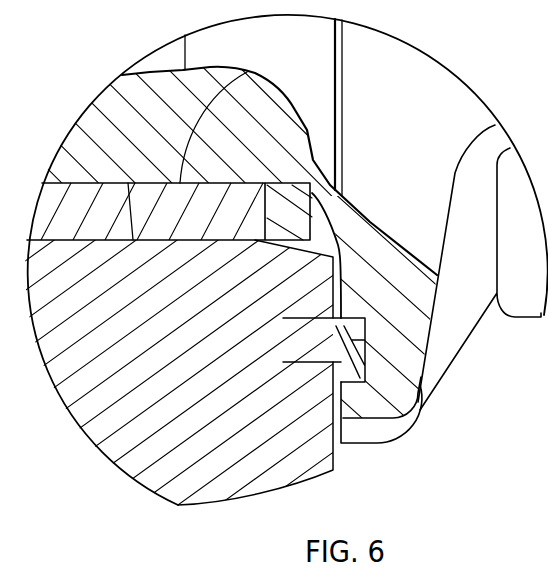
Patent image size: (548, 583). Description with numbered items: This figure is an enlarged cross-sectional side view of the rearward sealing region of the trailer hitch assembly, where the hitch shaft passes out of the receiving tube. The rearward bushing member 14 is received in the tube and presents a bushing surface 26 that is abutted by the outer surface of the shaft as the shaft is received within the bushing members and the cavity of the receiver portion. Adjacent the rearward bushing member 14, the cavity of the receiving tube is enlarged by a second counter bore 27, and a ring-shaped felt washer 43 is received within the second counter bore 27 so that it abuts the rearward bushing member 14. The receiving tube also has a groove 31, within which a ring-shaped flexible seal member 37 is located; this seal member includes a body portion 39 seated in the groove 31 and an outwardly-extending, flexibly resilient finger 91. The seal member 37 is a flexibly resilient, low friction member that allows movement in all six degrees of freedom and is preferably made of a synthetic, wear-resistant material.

The rearward bushing member 14 is at (60, 195).
The bushing surface 26 is at (235, 69).
The second counter bore 27 is at (128, 183).
The groove 31 is at (292, 363).
The ring-shaped flexible seal member 37 is at (283, 337).
The body portion 39 is at (308, 352).
The ring-shaped felt washer 43 is at (303, 184).
The flexibly resilient finger 91 is at (358, 354).